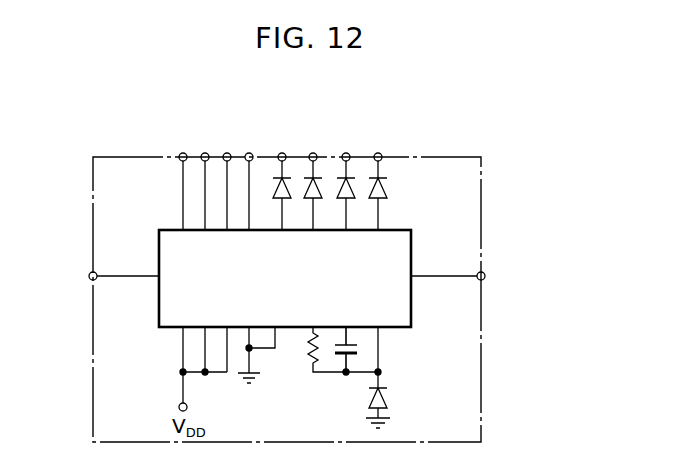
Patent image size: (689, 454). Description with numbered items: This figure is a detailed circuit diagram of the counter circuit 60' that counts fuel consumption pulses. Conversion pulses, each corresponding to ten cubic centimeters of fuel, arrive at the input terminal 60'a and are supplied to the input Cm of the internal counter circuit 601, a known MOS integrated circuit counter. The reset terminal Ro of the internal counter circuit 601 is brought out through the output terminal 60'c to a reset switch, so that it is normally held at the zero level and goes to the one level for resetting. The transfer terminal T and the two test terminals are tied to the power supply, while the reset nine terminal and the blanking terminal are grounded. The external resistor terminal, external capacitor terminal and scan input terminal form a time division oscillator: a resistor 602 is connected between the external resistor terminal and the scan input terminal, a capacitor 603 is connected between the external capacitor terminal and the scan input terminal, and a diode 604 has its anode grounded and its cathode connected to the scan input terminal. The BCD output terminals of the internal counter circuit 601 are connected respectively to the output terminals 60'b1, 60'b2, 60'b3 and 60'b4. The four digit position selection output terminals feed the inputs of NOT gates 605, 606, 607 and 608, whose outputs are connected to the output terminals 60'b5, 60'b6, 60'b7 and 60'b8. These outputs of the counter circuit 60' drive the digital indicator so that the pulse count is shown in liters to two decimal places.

The counter circuit 60' is at (314, 299).
The input terminal 60'a is at (95, 275).
The output terminal 60'c is at (476, 279).
The output terminal 60'b1 is at (165, 175).
The output terminal 60'b2 is at (193, 159).
The output terminal 60'b3 is at (233, 175).
The output terminal 60'b4 is at (255, 159).
The output terminal 60'b5 is at (295, 175).
The output terminal 60'b6 is at (323, 159).
The output terminal 60'b7 is at (358, 175).
The output terminal 60'b8 is at (395, 159).
The internal counter circuit 601 is at (411, 243).
The resistor 602 is at (307, 360).
The capacitor 603 is at (360, 350).
The diode 604 is at (387, 396).
The NOT gate 605 is at (268, 190).
The NOT gate 606 is at (305, 200).
The NOT gate 607 is at (352, 198).
The NOT gate 608 is at (386, 183).